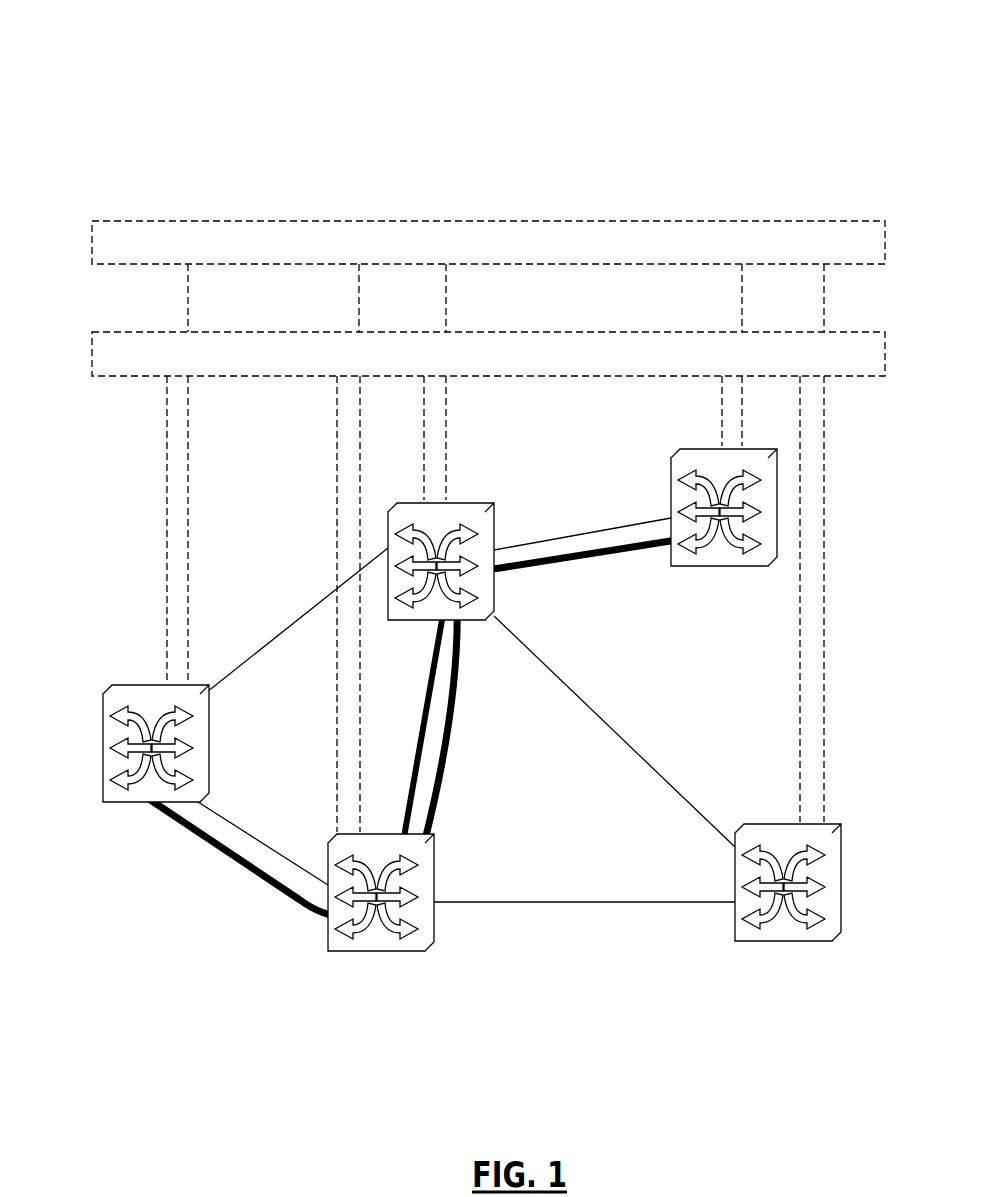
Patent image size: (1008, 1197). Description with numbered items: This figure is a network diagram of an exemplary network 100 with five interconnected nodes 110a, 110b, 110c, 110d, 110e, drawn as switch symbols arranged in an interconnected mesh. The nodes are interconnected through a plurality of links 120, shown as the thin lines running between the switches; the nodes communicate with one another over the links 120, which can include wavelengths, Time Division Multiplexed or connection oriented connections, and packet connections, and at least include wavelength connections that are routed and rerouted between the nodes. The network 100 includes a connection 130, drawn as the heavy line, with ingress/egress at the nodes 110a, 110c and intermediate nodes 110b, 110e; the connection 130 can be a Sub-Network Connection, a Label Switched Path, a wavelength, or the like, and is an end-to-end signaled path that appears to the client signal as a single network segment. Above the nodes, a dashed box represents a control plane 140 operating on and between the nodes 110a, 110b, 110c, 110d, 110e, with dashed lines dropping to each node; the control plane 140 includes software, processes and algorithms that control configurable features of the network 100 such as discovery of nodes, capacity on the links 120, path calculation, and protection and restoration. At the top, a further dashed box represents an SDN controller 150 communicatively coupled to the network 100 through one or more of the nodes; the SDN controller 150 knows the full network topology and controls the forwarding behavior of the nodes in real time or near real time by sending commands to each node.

The network 100 is at (538, 76).
The SDN controller 150 is at (640, 222).
The control plane 140 is at (637, 332).
The node 110a is at (102, 738).
The node 110b is at (477, 502).
The node 110c is at (732, 567).
The node 110d is at (788, 942).
The node 110e is at (328, 940).
The links 120 is at (563, 533).
The connection 130 is at (457, 747).